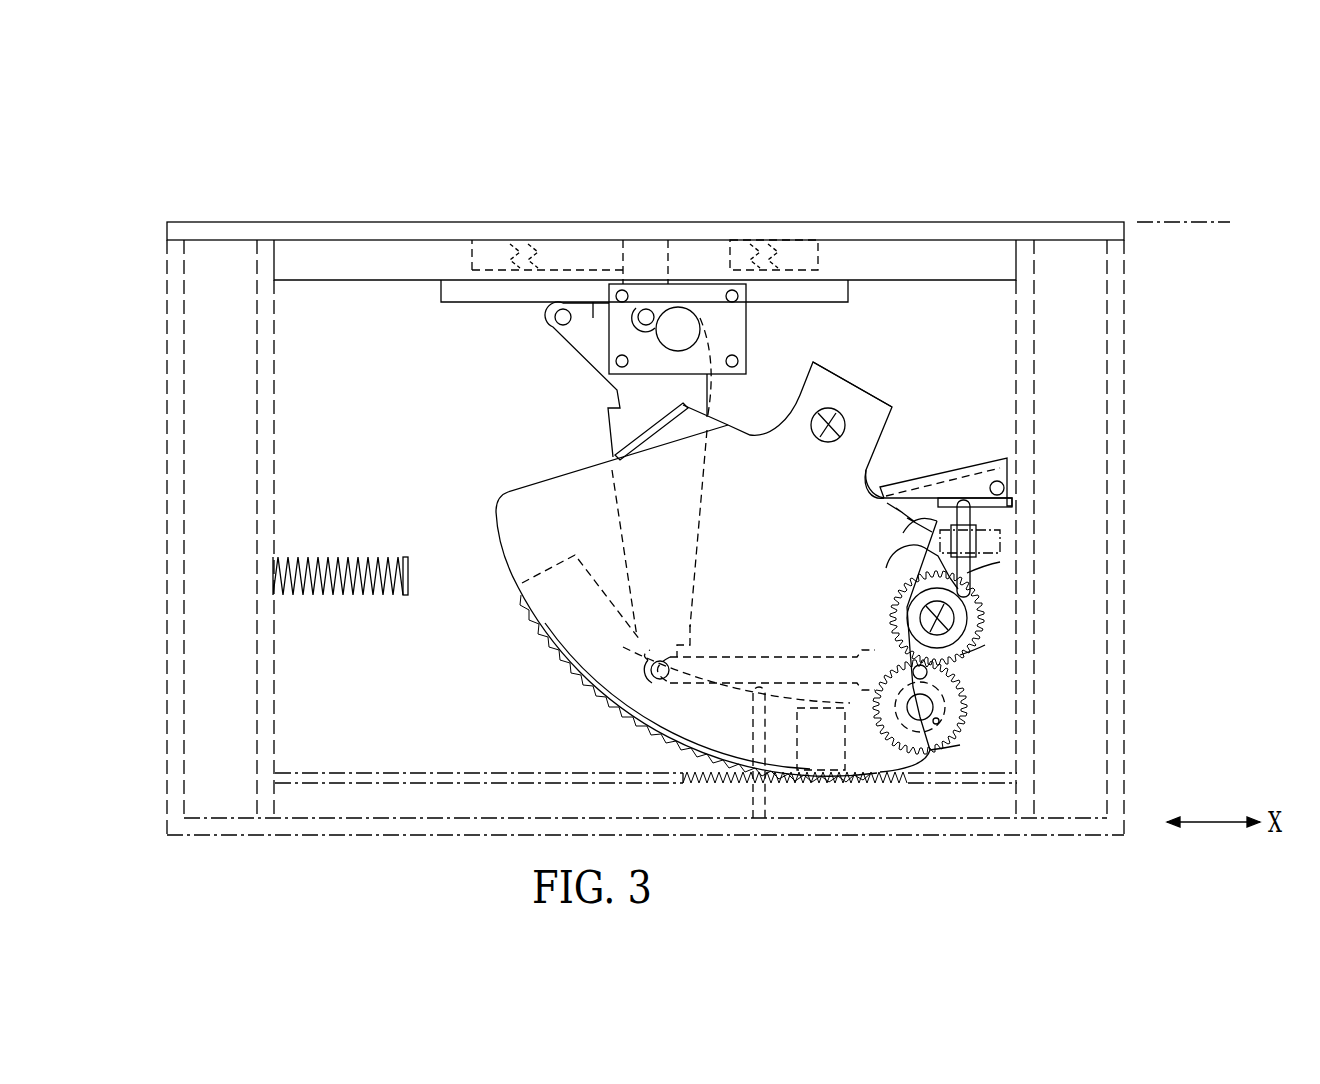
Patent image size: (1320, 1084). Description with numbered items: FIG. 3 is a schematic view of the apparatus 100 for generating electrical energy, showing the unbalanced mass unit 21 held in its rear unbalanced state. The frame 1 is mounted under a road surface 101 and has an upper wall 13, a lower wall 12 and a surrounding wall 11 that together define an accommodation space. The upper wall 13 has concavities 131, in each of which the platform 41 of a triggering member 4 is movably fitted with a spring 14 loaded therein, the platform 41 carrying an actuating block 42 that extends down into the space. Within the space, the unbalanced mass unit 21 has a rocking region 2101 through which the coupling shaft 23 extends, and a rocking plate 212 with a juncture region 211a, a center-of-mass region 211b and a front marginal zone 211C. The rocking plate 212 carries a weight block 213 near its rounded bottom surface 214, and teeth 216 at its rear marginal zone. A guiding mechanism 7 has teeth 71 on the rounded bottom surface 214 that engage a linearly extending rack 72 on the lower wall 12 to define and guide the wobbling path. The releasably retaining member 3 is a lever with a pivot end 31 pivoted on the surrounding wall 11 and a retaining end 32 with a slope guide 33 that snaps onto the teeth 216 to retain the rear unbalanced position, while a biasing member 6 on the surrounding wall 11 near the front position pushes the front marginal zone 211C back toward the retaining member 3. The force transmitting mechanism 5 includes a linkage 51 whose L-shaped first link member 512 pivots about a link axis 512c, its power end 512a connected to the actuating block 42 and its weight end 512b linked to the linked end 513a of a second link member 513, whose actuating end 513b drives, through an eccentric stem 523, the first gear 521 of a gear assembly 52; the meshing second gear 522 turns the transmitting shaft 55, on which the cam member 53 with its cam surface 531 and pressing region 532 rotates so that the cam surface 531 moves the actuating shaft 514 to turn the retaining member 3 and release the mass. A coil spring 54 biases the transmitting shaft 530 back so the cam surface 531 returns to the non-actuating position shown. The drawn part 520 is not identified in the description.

The frame 1 is at (1130, 605).
The releasably retaining member 3 is at (937, 478).
The triggering member 4 is at (812, 228).
The force transmitting mechanism 5 is at (580, 388).
The biasing member 6 is at (365, 565).
The guiding mechanism 7 is at (440, 715).
The surrounding wall 11 is at (1117, 314).
The lower wall 12 is at (983, 826).
The upper wall 13 is at (953, 232).
The spring 14 is at (497, 250).
The unbalanced mass unit 21 is at (850, 362).
The coupling shaft 23 is at (838, 420).
The pivot end 31 is at (1007, 465).
The retaining end 32 is at (883, 490).
The slope guide 33 is at (883, 505).
The platform 41 is at (730, 235).
The actuating block 42 is at (663, 290).
The linkage 51 is at (720, 325).
The gear assembly 52 is at (965, 672).
The cam member 53 is at (960, 618).
The coil spring 54 is at (945, 762).
The transmitting shaft 55 is at (925, 625).
The teeth 71 is at (545, 633).
The linearly extending rack 72 is at (683, 773).
The apparatus for generating electrical energy 100 is at (1113, 190).
The road surface 101 is at (1190, 222).
The concavity 131 is at (470, 258).
The rocking plate 212 is at (523, 490).
The weight block 213 is at (797, 785).
The rounded bottom surface 214 is at (563, 665).
The teeth 216 is at (903, 533).
The first link member 512 is at (708, 400).
The second link member 513 is at (830, 642).
The actuating shaft 514 is at (1003, 525).
The gear pin 520 is at (938, 722).
The first gear 521 is at (935, 705).
The second gear 522 is at (975, 645).
The eccentric stem 523 is at (925, 672).
The transmitting shaft 530 is at (925, 600).
The cam surface 531 is at (965, 575).
The pressing region 532 is at (905, 548).
The rocking region 2101 is at (897, 411).
The front marginal zone 211C is at (600, 433).
The juncture region 211a is at (1012, 505).
The center-of-mass region 211b is at (855, 785).
The power end 512a is at (593, 318).
The weight end 512b is at (690, 628).
The link axis 512c is at (690, 330).
The linked end 513a is at (620, 700).
The actuating end 513b is at (880, 790).